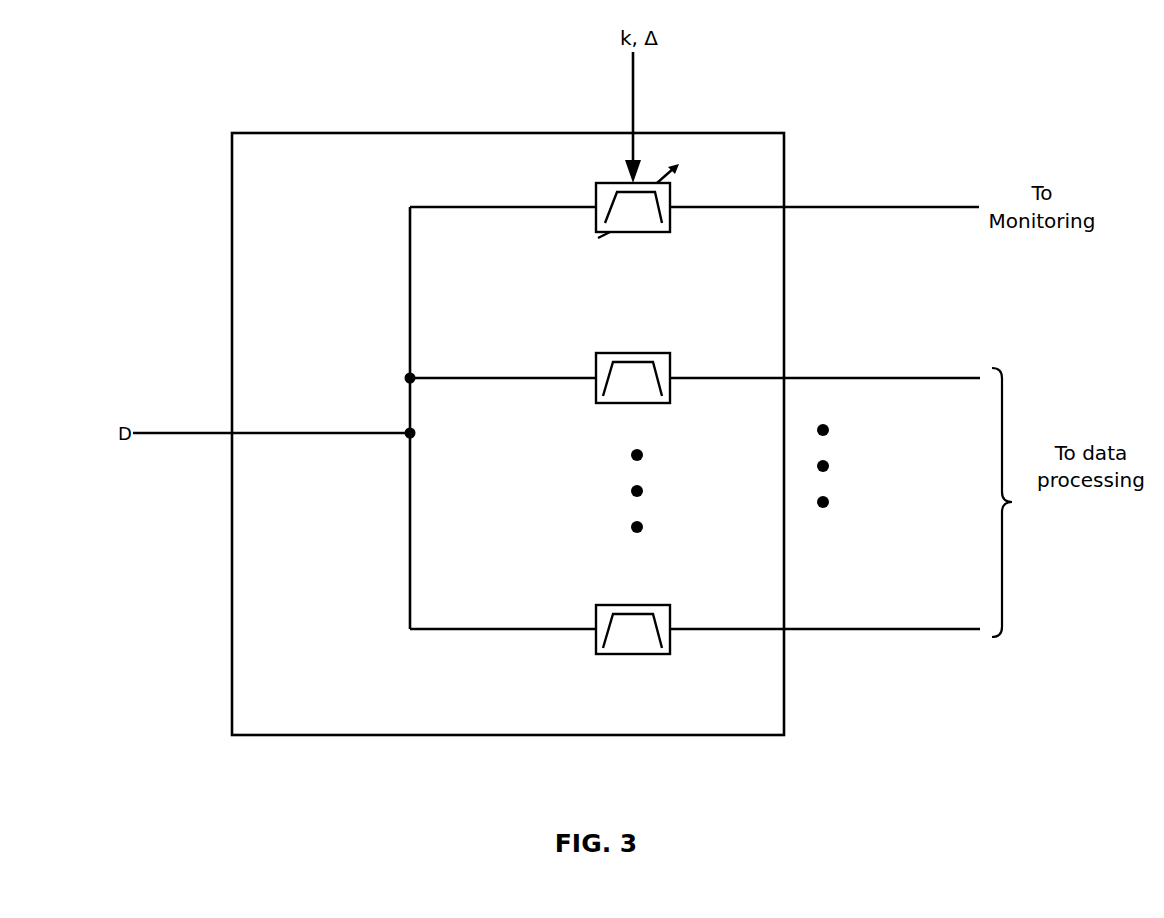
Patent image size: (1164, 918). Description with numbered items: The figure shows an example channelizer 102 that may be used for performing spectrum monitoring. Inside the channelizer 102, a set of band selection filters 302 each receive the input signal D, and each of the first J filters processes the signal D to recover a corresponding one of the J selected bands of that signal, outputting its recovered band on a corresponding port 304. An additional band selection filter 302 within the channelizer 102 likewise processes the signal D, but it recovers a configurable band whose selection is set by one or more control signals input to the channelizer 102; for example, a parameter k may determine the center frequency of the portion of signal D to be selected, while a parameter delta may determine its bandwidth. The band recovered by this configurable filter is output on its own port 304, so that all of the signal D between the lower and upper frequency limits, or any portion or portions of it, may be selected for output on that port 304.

The channelizer 102 is at (277, 705).
The band selection filter 302 is at (597, 183).
The port 304 is at (825, 404).